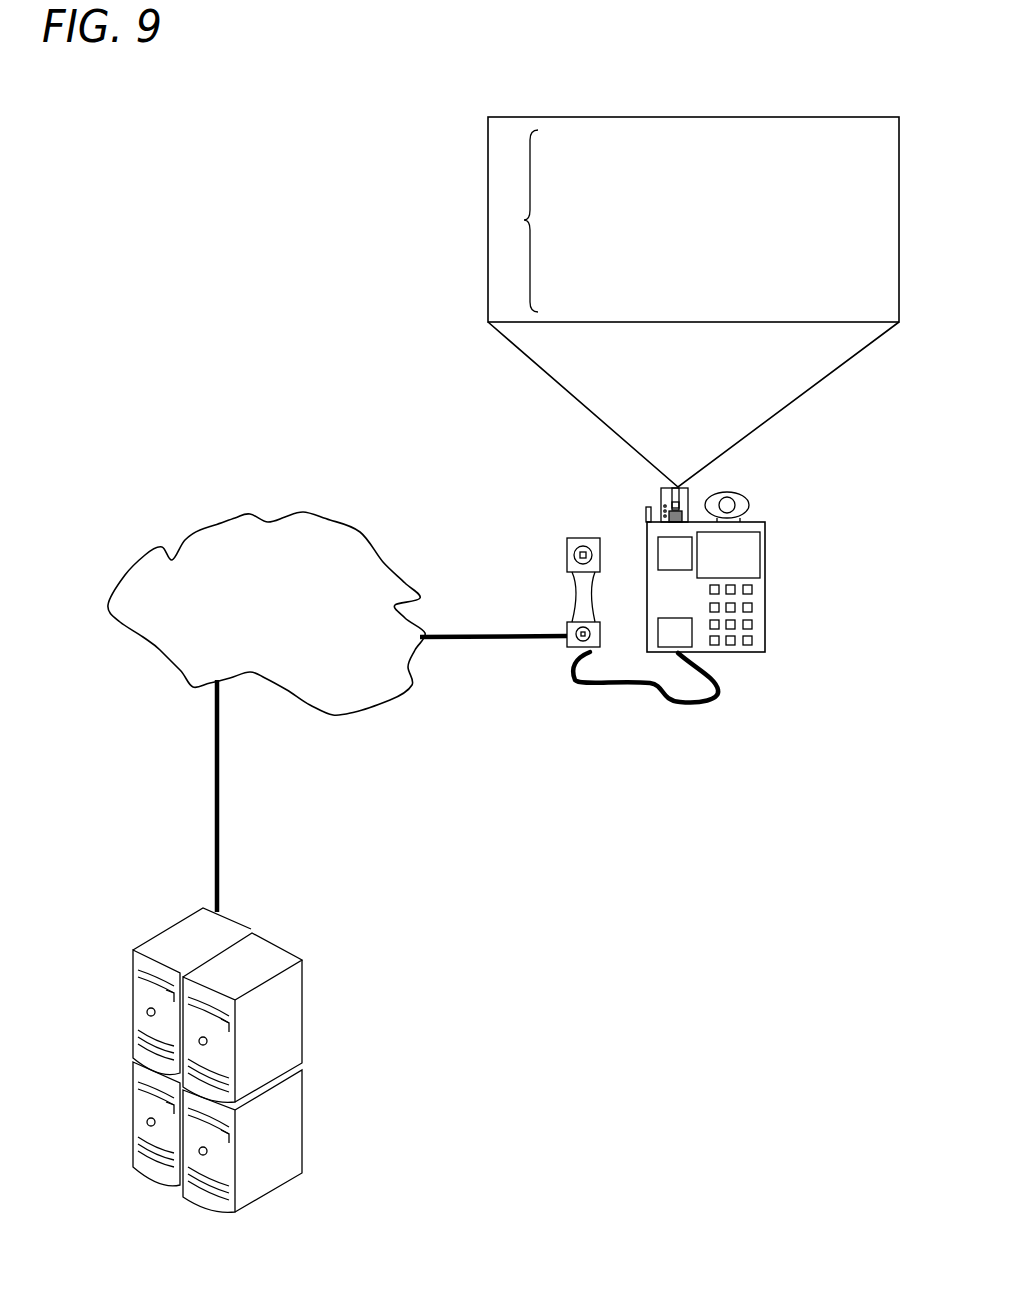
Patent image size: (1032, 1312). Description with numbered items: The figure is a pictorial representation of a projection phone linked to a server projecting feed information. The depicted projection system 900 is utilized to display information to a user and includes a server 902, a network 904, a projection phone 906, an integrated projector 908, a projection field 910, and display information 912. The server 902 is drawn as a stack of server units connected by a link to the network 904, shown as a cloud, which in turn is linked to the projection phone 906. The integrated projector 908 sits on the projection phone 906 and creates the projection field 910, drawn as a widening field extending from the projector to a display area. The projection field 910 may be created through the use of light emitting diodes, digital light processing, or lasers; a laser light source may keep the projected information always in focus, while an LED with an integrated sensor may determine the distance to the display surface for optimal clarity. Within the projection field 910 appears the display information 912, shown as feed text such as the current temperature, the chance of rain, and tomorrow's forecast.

The projection system 900 is at (224, 204).
The server 902 is at (303, 1093).
The network 904 is at (284, 636).
The projection phone 906 is at (727, 652).
The integrated projector 908 is at (660, 490).
The projection field 910 is at (785, 410).
The display information 912 is at (529, 225).